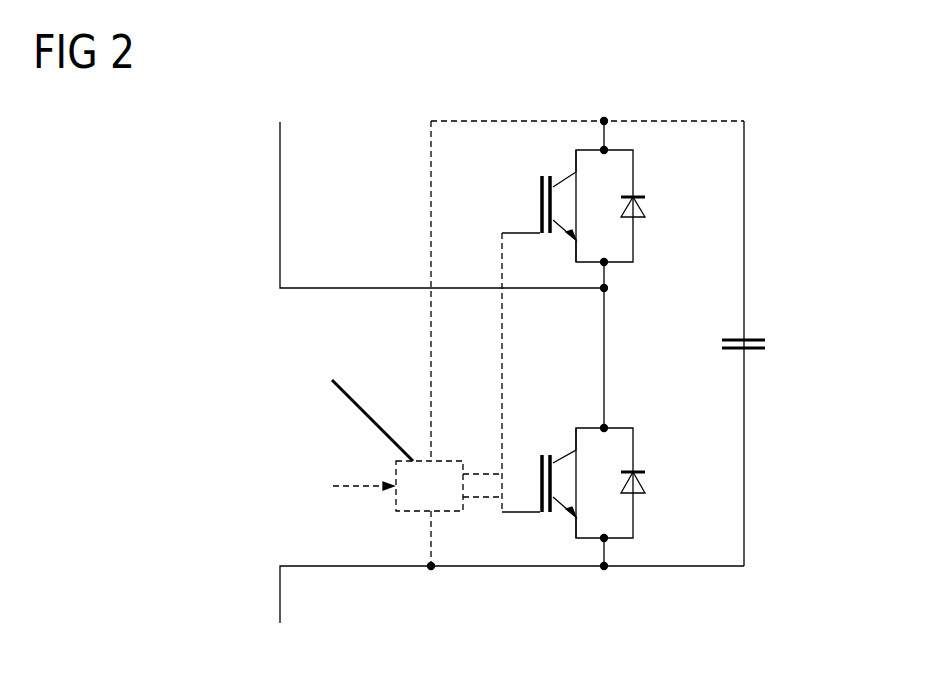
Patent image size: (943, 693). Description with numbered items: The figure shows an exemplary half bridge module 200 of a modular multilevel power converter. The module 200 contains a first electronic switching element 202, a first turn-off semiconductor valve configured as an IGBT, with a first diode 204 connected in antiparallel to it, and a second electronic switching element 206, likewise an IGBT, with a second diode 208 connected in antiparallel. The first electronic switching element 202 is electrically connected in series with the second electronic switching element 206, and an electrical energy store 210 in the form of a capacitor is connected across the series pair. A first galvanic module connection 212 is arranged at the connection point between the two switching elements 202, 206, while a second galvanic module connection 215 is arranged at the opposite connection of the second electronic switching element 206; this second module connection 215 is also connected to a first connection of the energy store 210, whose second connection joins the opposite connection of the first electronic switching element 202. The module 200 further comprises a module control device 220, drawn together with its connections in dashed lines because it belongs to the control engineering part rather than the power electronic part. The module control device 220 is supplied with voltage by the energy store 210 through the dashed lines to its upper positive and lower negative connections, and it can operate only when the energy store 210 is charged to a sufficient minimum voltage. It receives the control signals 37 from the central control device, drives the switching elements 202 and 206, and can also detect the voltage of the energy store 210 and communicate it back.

The module 200 is at (746, 104).
The first electronic switching element 202 is at (541, 186).
The first diode 204 is at (646, 206).
The second electronic switching element 206 is at (541, 494).
The second diode 208 is at (646, 487).
The energy store 210 is at (773, 345).
The first galvanic module connection 212 is at (280, 211).
The second galvanic module connection 215 is at (280, 599).
The module control device 220 is at (415, 512).
The control signals 37 is at (356, 486).